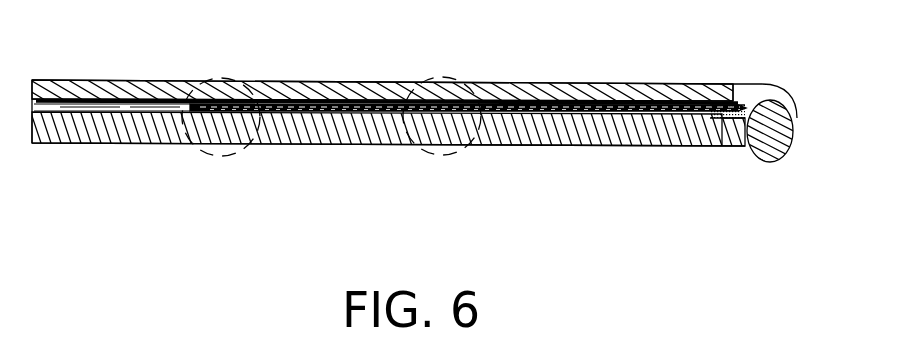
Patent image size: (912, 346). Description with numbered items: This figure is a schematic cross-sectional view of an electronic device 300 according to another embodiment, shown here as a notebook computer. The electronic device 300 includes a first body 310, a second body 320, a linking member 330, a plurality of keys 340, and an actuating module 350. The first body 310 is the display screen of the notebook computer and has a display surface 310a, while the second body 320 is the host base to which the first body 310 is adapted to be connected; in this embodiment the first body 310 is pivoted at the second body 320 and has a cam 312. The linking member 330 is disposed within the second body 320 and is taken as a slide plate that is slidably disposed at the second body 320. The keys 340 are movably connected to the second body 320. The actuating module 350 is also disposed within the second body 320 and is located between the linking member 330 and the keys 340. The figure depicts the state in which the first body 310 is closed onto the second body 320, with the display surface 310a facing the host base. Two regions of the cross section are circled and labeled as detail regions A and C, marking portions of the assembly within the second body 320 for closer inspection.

The electronic device 300 is at (850, 263).
The first body 310 is at (710, 89).
The display surface 310a is at (534, 90).
The cam 312 is at (771, 131).
The second body 320 is at (650, 136).
The linking member 330 is at (739, 147).
The keys 340 is at (664, 89).
The actuating module 350 is at (752, 86).
The detail region A is at (442, 155).
The detail region C is at (221, 156).